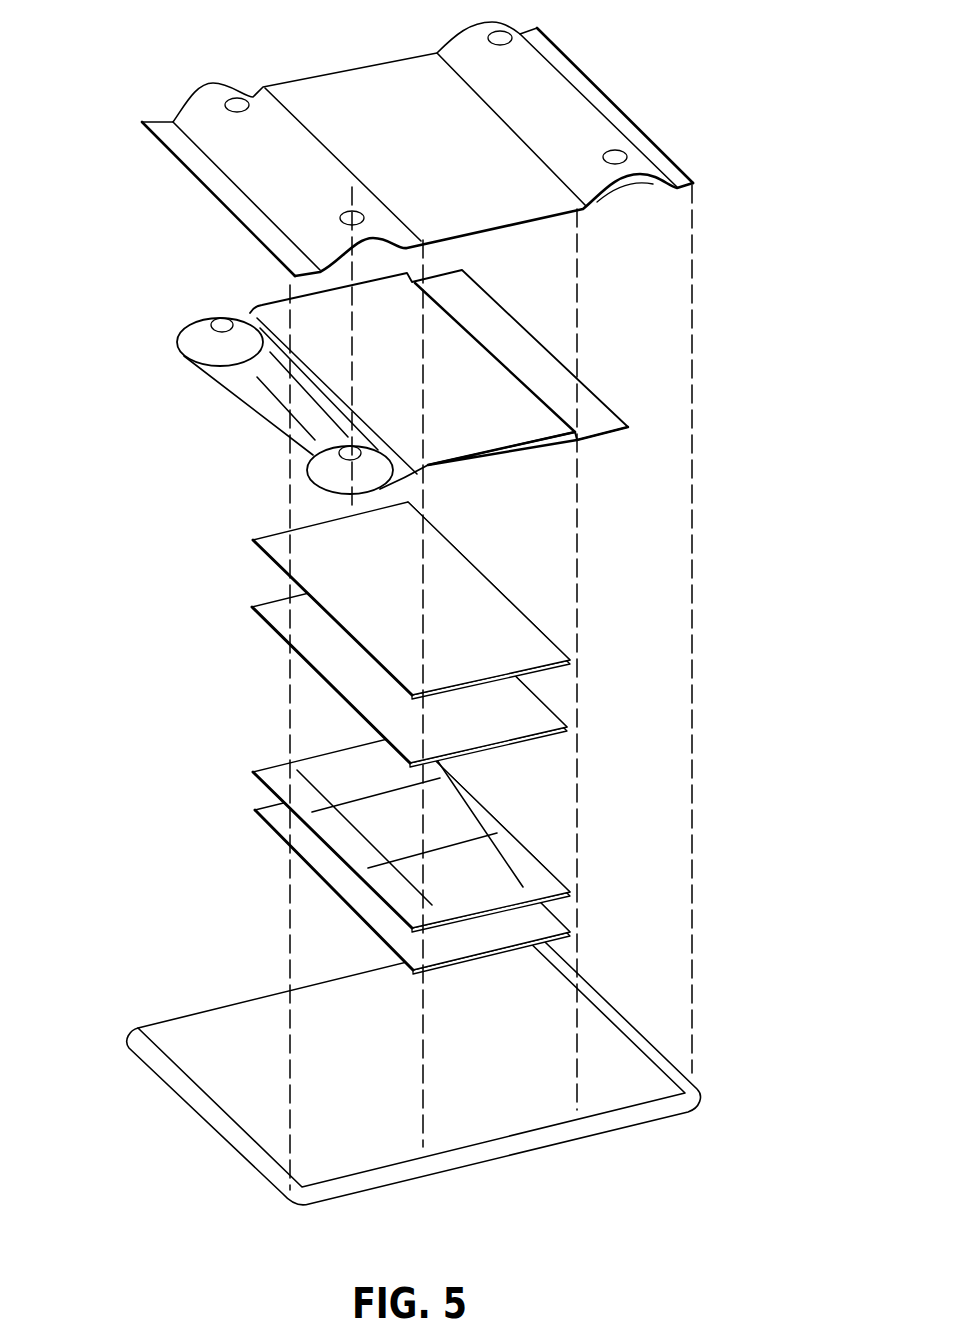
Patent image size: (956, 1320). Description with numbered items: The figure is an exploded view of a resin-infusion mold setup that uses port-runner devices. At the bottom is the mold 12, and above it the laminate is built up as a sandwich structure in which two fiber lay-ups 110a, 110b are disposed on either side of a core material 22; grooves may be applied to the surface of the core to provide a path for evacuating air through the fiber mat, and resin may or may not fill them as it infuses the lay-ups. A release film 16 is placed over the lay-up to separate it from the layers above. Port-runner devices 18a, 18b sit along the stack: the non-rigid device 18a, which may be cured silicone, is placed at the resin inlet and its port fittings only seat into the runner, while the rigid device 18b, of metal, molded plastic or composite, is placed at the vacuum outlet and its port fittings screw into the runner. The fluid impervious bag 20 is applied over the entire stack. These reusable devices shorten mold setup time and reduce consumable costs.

The mold 12 is at (275, 1142).
The release film 16 is at (272, 540).
The non-rigid port-runner device 18a is at (316, 462).
The rigid port-runner device 18b is at (193, 333).
The fluid impervious bag 20 is at (352, 75).
The core material 22 is at (267, 770).
The fiber lay-up 110a is at (277, 613).
The fiber lay-up 110b is at (280, 828).